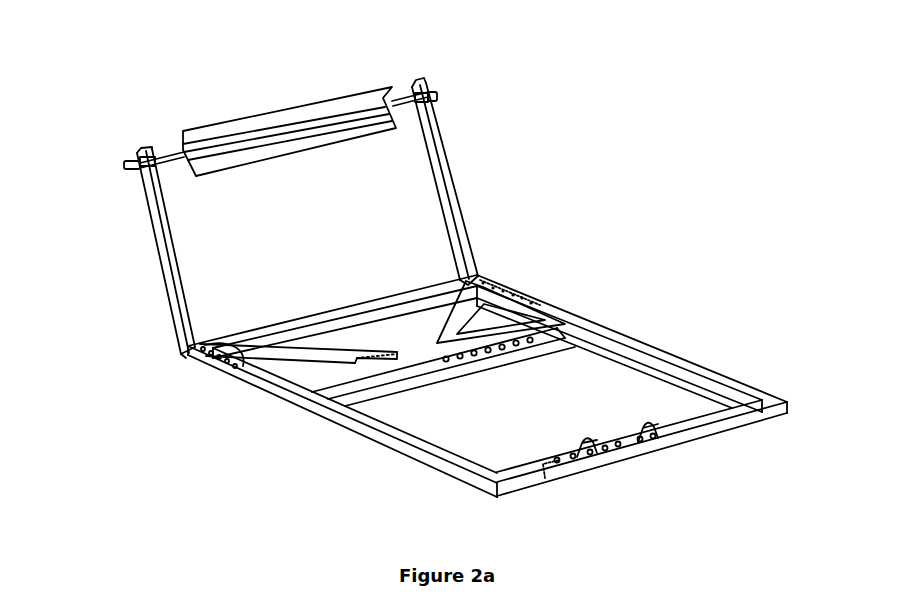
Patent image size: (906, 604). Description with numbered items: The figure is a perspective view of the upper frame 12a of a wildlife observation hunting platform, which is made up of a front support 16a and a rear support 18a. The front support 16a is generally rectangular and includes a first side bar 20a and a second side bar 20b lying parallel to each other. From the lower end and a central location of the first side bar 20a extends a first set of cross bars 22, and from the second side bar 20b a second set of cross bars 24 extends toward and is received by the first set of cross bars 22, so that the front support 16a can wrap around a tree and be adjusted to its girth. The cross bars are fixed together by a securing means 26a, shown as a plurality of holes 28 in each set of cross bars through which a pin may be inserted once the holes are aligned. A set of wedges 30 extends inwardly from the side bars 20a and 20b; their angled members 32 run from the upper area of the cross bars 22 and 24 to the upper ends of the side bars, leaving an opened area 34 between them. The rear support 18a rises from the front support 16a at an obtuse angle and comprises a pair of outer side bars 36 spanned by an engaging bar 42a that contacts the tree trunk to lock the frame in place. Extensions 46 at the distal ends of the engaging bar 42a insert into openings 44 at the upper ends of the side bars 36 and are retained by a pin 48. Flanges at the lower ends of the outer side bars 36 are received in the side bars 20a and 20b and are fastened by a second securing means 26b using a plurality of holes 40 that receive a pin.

The upper frame 12a is at (774, 91).
The front support 16a is at (312, 481).
The rear support 18a is at (105, 309).
The first side bar 20a is at (683, 362).
The second side bar 20b is at (283, 395).
The first set of cross bars 22 is at (718, 437).
The second set of cross bars 24 is at (543, 478).
The securing means 26a is at (487, 364).
The second securing means 26b is at (203, 343).
The holes 28 is at (607, 455).
The wedges 30 is at (492, 286).
The angled members 32 is at (461, 308).
The opened area 34 is at (384, 300).
The outer side bars 36 is at (158, 255).
The holes 40 is at (187, 358).
The engaging bar 42a is at (282, 108).
The openings 44 is at (429, 88).
The extensions 46 is at (160, 152).
The pin 48 is at (129, 153).